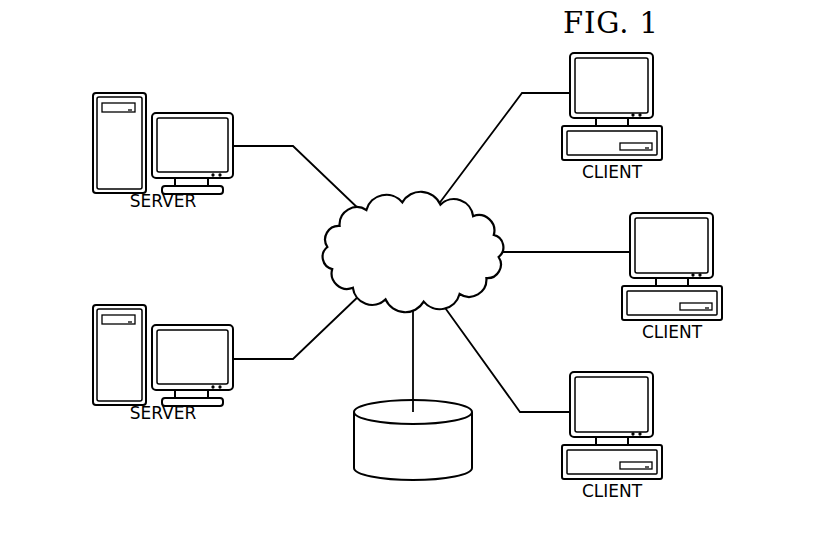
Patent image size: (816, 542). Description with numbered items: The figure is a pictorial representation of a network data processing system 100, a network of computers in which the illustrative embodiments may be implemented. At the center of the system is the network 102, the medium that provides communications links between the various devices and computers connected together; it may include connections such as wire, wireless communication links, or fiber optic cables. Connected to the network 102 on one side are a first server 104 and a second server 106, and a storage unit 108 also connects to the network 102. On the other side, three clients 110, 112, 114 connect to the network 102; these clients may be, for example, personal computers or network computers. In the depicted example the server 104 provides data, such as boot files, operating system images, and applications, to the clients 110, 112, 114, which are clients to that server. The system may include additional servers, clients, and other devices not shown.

The network data processing system 100 is at (300, 69).
The network 102 is at (405, 199).
The server 104 is at (92, 143).
The server 106 is at (92, 355).
The storage unit 108 is at (353, 441).
The client 110 is at (662, 146).
The client 112 is at (722, 304).
The client 114 is at (662, 463).